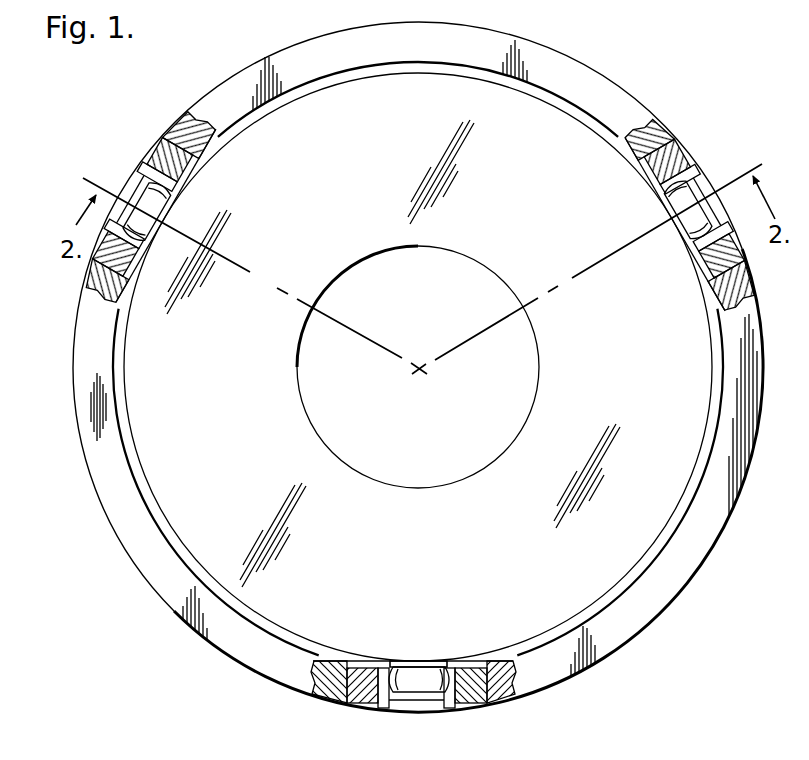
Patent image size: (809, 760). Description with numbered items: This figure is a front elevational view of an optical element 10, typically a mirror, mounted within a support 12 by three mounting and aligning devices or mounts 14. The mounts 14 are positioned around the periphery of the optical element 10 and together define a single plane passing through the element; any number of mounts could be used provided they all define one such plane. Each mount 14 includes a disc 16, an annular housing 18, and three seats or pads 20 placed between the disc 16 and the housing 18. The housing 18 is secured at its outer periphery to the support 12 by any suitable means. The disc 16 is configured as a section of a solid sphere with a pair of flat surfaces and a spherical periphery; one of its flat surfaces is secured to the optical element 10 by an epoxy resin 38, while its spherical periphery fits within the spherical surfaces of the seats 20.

The optical element 10 is at (407, 122).
The support 12 is at (535, 46).
The mounting and aligning device 14 is at (420, 432).
The disc 16 is at (143, 206).
The annular housing 18 is at (175, 127).
The seat 20 is at (133, 234).
The epoxy resin 38 is at (437, 660).